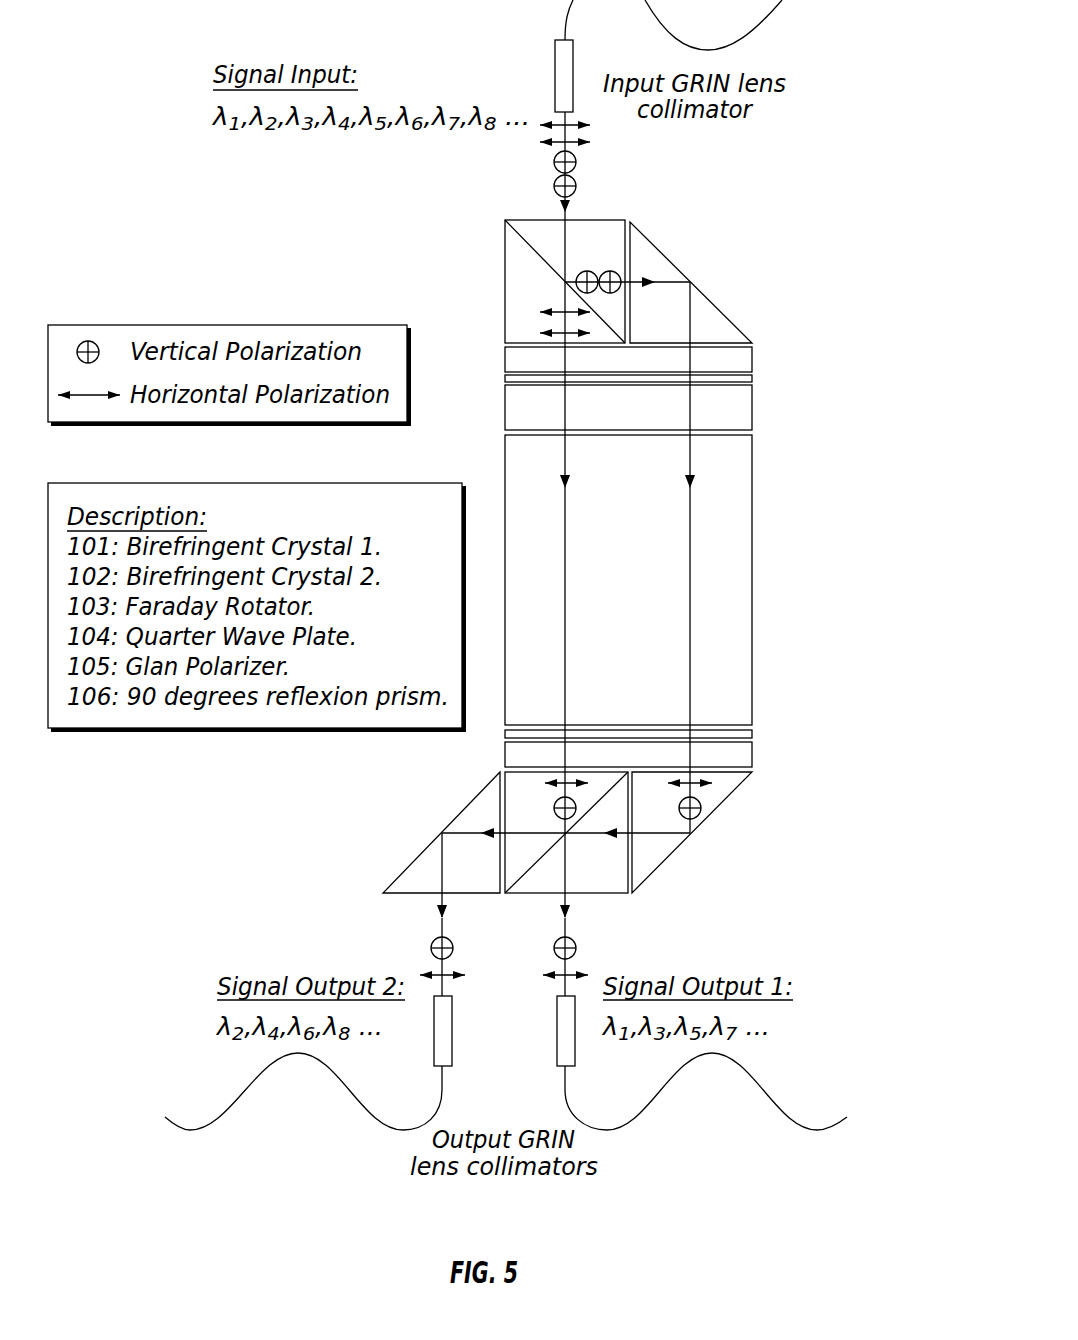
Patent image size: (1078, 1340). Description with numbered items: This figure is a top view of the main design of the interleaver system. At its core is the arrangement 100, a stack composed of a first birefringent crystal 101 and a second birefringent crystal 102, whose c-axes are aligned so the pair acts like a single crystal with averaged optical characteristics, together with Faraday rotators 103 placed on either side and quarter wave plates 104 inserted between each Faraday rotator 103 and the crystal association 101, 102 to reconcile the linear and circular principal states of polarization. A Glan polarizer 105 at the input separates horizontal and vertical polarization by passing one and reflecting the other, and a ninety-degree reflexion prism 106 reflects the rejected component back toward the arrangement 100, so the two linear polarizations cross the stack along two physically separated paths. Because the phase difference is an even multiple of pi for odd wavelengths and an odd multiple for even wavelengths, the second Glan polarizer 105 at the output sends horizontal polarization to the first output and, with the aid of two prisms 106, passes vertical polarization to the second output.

The arrangement 100 is at (827, 311).
The birefringent crystal 1 101 is at (750, 568).
The birefringent crystal 2 102 is at (750, 420).
The Faraday rotator 103 is at (755, 358).
The quarter wave plate 104 is at (755, 380).
The Glan polarizer 105 is at (612, 235).
The 90 degrees reflexion prism 106 is at (684, 297).